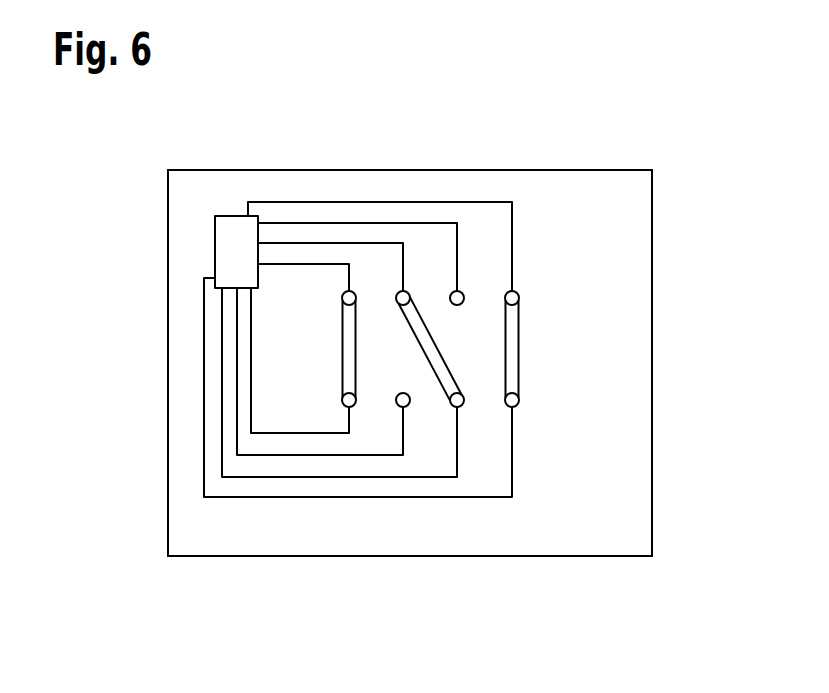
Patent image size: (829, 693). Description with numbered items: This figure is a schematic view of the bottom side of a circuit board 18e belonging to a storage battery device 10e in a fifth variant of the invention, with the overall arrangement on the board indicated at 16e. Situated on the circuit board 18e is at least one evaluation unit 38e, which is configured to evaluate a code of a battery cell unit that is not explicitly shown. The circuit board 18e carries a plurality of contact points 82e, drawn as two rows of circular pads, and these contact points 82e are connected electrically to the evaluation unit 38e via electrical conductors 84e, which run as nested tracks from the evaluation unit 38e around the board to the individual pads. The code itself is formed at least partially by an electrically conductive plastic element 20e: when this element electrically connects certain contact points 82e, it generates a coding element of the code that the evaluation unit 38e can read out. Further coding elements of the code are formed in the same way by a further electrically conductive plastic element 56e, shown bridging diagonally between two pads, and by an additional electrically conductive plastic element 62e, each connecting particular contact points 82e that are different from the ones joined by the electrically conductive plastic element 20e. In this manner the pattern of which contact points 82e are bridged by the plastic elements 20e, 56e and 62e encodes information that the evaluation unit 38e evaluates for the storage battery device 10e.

The storage battery device 10e is at (580, 133).
The sensor unit 16e is at (225, 152).
The circuit board 18e is at (197, 198).
The evaluation unit 38e is at (227, 252).
The electrical conductors 84e is at (281, 221).
The contact points 82e is at (403, 297).
The electrically conductive plastic element 20e is at (347, 347).
The further electrically conductive plastic element 56e is at (441, 372).
The additional electrically conductive plastic element 62e is at (510, 355).